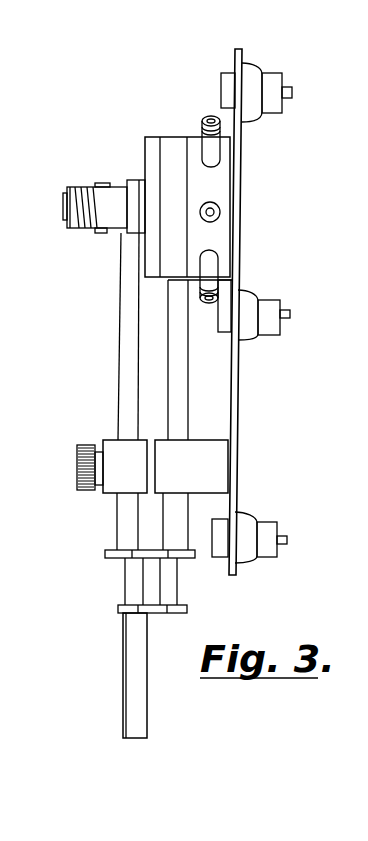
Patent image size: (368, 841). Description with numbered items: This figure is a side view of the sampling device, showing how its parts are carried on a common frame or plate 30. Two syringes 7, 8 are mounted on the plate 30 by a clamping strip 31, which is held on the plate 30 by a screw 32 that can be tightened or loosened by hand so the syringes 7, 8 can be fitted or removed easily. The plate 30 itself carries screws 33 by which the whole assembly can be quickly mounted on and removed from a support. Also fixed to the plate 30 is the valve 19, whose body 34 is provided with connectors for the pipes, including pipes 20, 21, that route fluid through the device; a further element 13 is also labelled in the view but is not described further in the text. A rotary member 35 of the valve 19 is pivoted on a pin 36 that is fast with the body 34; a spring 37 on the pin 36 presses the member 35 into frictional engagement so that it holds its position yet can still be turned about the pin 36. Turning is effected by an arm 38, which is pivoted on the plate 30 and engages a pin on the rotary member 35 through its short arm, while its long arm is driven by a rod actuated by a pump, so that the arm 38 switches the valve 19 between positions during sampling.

The syringe 7 is at (125, 368).
The syringe 8 is at (145, 524).
The upper pin 13 is at (210, 149).
The valve 19 is at (158, 158).
The pipe 20 is at (221, 209).
The pipe 21 is at (213, 268).
The plate 30 is at (239, 368).
The clamping strip 31 is at (125, 486).
The screw 32 is at (77, 460).
The screws 33 is at (292, 92).
The body 34 is at (220, 176).
The rotary member 35 is at (143, 168).
The pin 36 is at (63, 205).
The spring 37 is at (78, 188).
The arm 38 is at (95, 233).